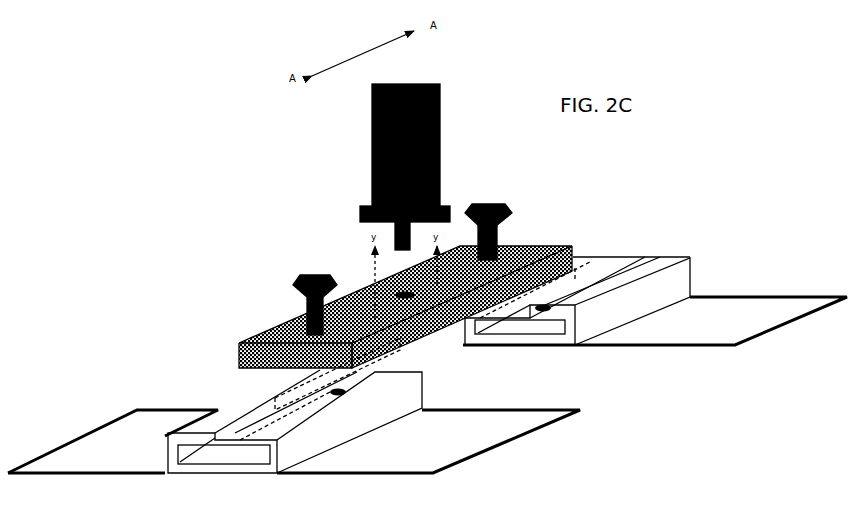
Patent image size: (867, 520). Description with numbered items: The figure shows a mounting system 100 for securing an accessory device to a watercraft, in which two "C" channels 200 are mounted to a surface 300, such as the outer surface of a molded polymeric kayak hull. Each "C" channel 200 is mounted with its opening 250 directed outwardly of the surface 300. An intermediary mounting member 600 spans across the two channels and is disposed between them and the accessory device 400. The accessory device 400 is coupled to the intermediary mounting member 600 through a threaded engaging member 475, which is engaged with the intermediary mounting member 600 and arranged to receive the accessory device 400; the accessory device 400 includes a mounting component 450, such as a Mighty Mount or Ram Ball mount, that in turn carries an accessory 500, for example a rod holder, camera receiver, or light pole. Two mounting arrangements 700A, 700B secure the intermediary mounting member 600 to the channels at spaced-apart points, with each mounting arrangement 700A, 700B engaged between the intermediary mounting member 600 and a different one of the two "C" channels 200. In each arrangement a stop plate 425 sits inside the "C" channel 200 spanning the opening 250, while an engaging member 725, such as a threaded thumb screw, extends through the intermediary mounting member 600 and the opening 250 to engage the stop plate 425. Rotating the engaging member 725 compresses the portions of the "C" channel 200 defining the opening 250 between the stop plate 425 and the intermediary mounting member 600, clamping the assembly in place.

The mounting system 100 is at (250, 170).
The "C" channel 200 is at (262, 472).
The opening 250 is at (250, 418).
The surface 300 is at (427, 385).
The accessory device 400 is at (384, 167).
The stop plate 425 is at (285, 405).
The mounting component 450 is at (362, 214).
The threaded engaging member 475 is at (393, 223).
The accessory 500 is at (372, 137).
The intermediary mounting member 600 is at (372, 353).
The mounting arrangement 700A is at (300, 275).
The mounting arrangement 700B is at (488, 200).
The engaging member 725 is at (305, 322).